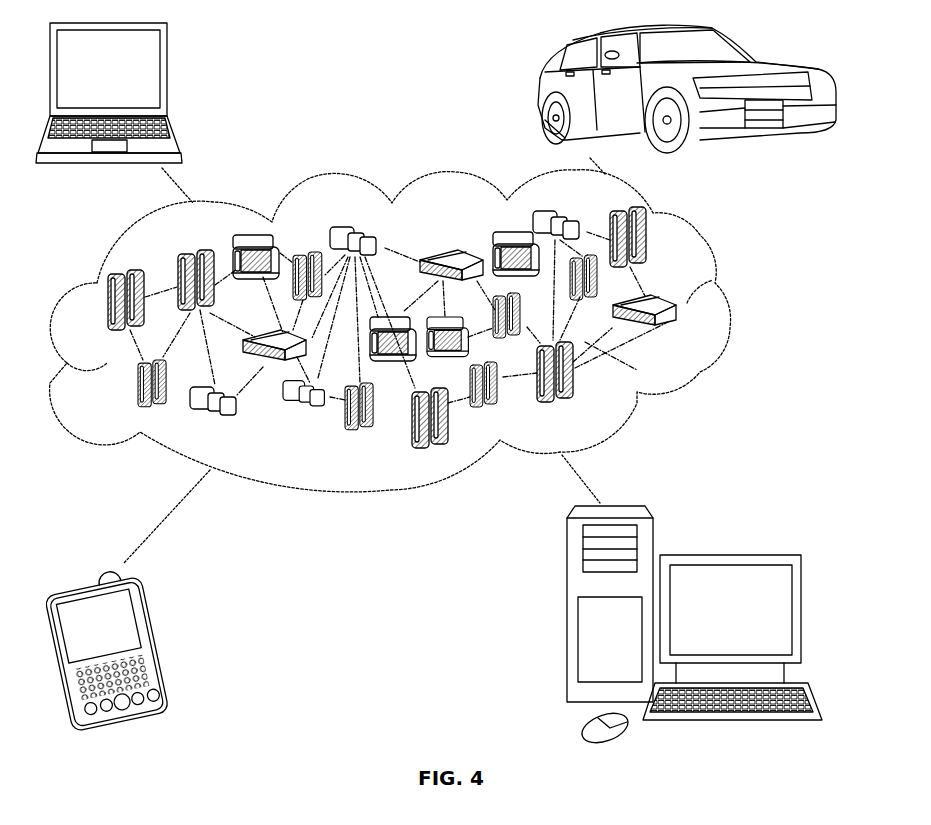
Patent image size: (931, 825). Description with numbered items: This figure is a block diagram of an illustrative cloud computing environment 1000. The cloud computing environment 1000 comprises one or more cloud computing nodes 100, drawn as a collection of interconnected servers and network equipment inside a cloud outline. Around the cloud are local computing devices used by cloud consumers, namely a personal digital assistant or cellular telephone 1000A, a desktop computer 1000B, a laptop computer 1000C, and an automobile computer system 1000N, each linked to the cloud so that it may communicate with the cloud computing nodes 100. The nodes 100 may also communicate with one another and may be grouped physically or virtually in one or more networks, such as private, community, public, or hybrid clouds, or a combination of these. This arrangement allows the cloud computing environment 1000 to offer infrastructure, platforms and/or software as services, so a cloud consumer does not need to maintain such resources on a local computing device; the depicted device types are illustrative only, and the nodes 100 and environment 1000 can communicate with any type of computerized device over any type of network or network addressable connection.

The cloud computing nodes 100 is at (438, 327).
The cloud computing environment 1000 is at (727, 308).
The personal digital assistant (PDA) or cellular telephone 1000A is at (160, 640).
The desktop computer 1000B is at (738, 537).
The laptop computer 1000C is at (164, 75).
The automobile computer system 1000N is at (538, 90).